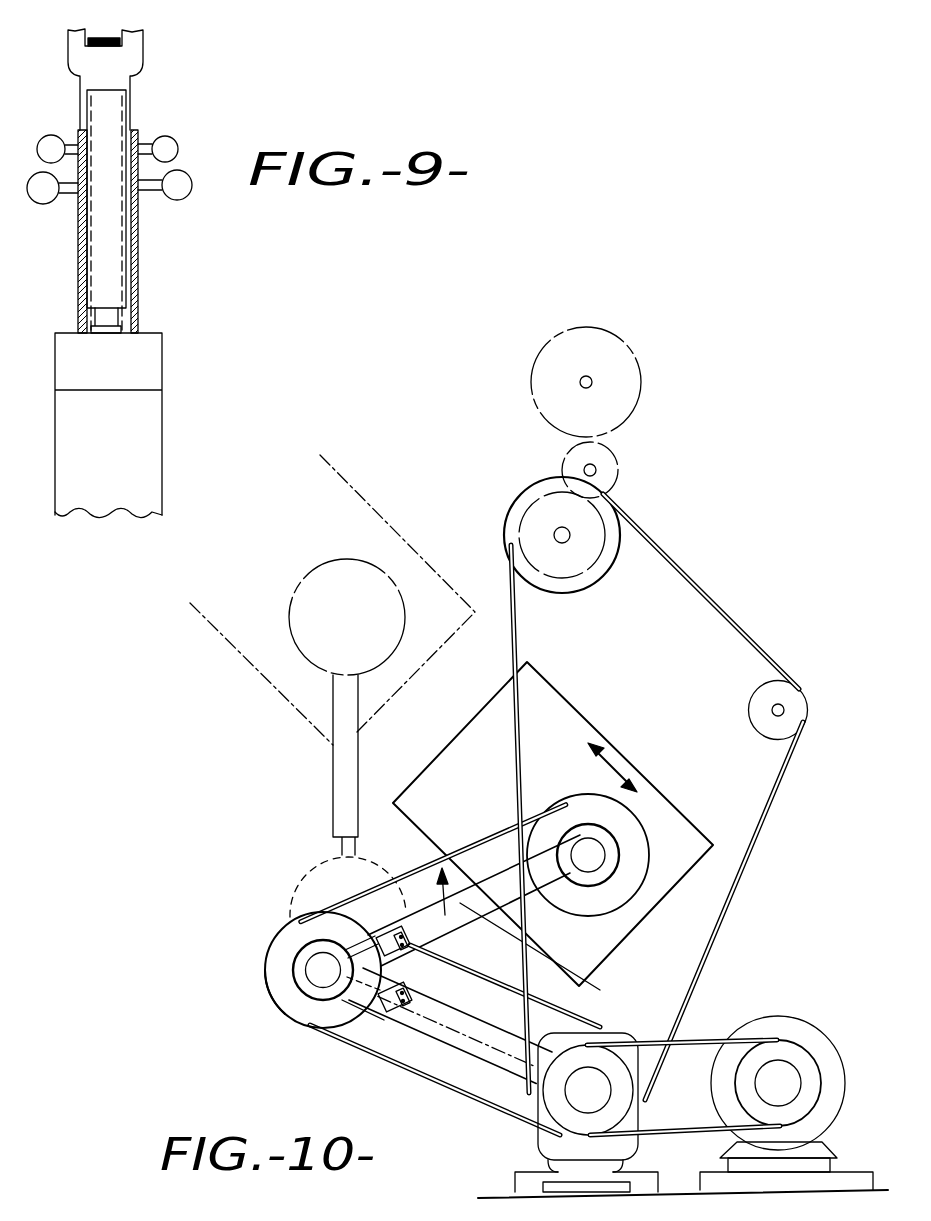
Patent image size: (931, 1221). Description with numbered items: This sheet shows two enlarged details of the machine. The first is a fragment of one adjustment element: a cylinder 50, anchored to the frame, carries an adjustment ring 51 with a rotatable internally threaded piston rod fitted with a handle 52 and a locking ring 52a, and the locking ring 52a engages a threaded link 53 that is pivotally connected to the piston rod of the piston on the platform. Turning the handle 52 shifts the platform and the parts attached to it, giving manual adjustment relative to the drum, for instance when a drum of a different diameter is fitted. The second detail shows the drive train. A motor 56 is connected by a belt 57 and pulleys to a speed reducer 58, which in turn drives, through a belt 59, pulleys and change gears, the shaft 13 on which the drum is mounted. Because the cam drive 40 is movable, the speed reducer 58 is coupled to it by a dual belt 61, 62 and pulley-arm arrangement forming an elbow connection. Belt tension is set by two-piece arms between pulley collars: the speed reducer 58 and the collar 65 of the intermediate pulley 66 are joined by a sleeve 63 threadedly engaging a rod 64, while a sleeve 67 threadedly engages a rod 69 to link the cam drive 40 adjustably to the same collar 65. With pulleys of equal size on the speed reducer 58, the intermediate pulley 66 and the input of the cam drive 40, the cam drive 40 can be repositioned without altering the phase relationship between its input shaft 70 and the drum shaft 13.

In FIG. 10, the shaft 13 is at (582, 378).
In FIG. 10, the cam drive 40 is at (458, 752).
In FIG. 9, the cylinder 50 is at (148, 420).
In FIG. 9, the adjustment ring 51 is at (140, 285).
In FIG. 9, the handle 52 is at (170, 192).
In FIG. 9, the locking ring 52a is at (48, 145).
In FIG. 9, the threaded link 53 is at (120, 114).
In FIG. 10, the motor 56 is at (817, 1042).
In FIG. 10, the belt 57 is at (687, 1043).
In FIG. 10, the speed reducer 58 is at (552, 1147).
In FIG. 10, the belt 59 is at (704, 592).
In FIG. 10, the belt 61 is at (378, 1062).
In FIG. 10, the belt 62 is at (420, 866).
In FIG. 10, the sleeve 63 is at (425, 1027).
In FIG. 10, the rod 64 is at (355, 1018).
In FIG. 10, the collar 65 is at (300, 970).
In FIG. 10, the intermediate pulley 66 is at (288, 1005).
In FIG. 10, the sleeve 67 is at (440, 925).
In FIG. 10, the rod 69 is at (355, 940).
In FIG. 10, the input shaft 70 is at (586, 850).